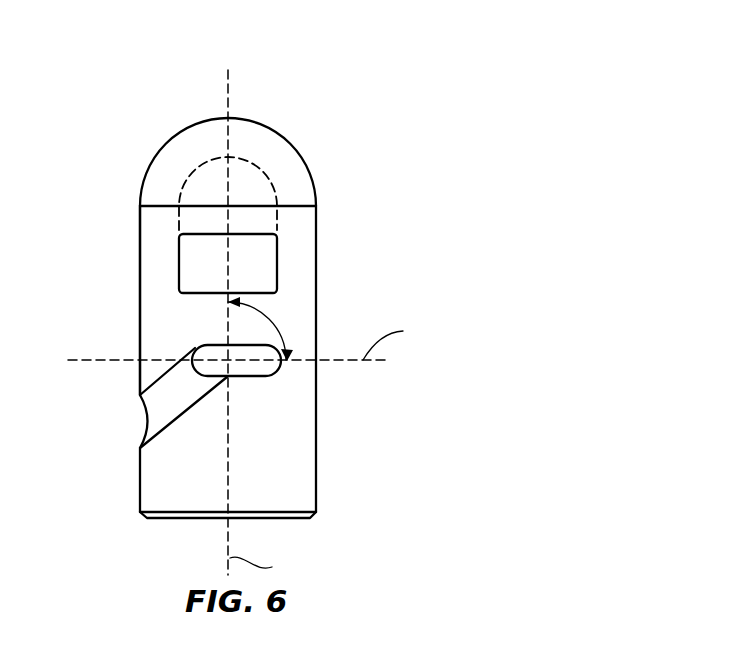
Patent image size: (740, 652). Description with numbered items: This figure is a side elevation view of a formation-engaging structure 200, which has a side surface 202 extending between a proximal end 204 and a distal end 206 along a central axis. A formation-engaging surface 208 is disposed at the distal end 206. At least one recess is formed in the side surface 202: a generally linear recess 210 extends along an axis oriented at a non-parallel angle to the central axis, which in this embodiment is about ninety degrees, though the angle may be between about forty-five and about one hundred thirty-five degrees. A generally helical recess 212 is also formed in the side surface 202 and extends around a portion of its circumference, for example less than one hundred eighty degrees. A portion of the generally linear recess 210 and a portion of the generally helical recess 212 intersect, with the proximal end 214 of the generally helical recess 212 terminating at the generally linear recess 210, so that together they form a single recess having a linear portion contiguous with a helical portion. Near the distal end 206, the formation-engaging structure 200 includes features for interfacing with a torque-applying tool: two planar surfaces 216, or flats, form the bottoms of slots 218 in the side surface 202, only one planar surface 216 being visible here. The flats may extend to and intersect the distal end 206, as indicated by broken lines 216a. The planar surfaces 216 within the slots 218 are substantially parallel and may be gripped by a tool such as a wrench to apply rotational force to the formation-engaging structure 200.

The formation-engaging structure 200 is at (246, 300).
The side surface 202 is at (318, 240).
The proximal end 204 is at (335, 523).
The distal end 206 is at (322, 185).
The formation-engaging surface 208 is at (167, 168).
The generally linear recess 210 is at (250, 368).
The generally helical recess 212 is at (166, 403).
The proximal end of the generally helical recess 214 is at (186, 348).
The planar surface 216 is at (203, 257).
The broken lines 216a is at (250, 157).
The slot 218 is at (168, 277).